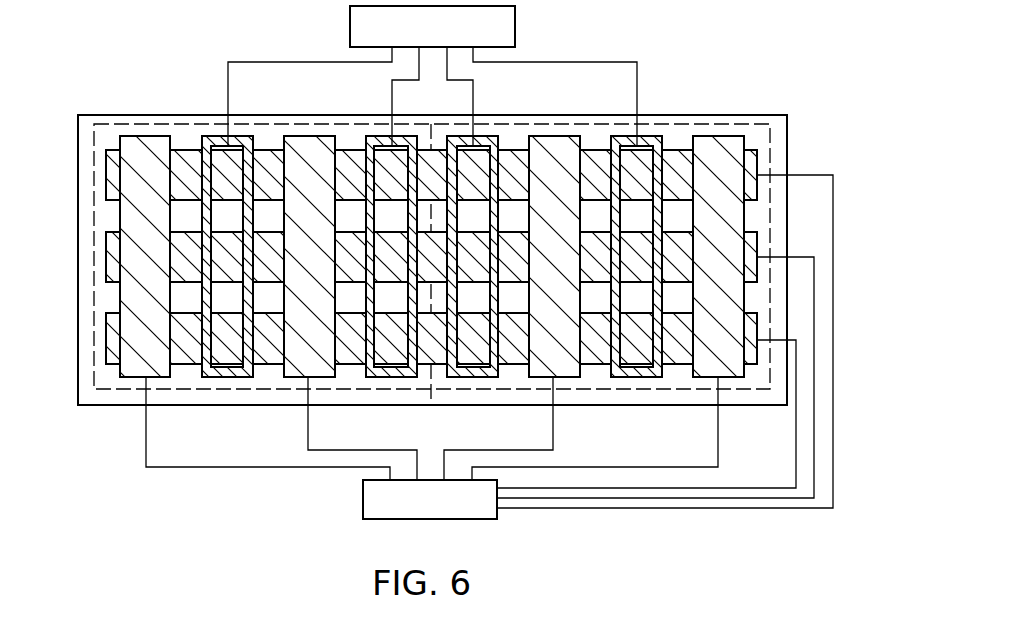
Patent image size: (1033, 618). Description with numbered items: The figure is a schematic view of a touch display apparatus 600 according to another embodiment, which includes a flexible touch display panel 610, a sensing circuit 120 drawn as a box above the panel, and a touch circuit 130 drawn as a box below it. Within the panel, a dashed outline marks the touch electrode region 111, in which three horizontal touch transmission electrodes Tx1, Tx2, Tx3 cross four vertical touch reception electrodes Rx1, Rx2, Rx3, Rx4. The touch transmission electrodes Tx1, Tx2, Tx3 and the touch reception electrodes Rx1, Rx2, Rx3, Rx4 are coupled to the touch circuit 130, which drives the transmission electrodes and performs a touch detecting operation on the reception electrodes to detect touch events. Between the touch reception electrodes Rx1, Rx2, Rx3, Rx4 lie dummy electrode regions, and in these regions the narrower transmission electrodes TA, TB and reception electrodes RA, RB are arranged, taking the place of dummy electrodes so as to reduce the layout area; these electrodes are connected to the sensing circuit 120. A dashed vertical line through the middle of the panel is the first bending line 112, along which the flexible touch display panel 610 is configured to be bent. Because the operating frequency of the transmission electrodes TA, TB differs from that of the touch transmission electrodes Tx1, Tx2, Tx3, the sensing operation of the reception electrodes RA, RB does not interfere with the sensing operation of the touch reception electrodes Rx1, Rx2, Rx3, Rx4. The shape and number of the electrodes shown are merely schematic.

The touch display apparatus 600 is at (433, 296).
The flexible touch display panel 610 is at (132, 115).
The touch electrode region 111 is at (730, 125).
The first bending line 112 is at (432, 130).
The sensing circuit 120 is at (350, 27).
The touch circuit 130 is at (363, 500).
The touch transmission electrode Tx1 is at (106, 175).
The touch transmission electrode Tx2 is at (106, 257).
The touch transmission electrode Tx3 is at (106, 339).
The touch reception electrode Rx1 is at (157, 377).
The touch reception electrode Rx2 is at (323, 377).
The touch reception electrode Rx3 is at (537, 377).
The touch reception electrode Rx4 is at (706, 377).
The reception electrode RB is at (204, 136).
The reception electrode RA is at (366, 136).
The transmission electrode TA is at (489, 136).
The transmission electrode TB is at (654, 136).